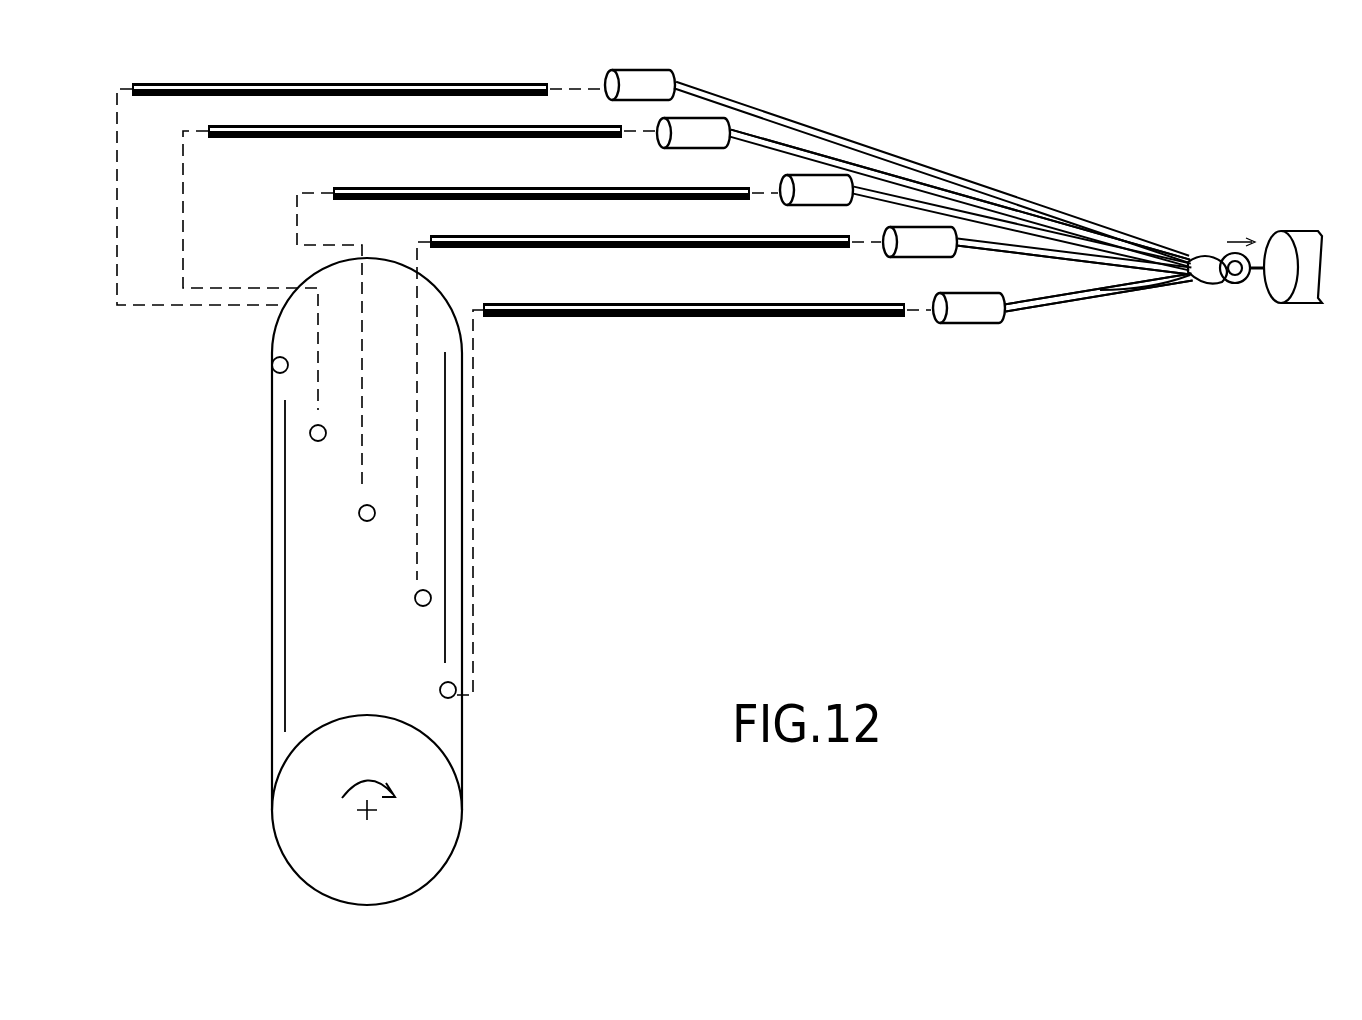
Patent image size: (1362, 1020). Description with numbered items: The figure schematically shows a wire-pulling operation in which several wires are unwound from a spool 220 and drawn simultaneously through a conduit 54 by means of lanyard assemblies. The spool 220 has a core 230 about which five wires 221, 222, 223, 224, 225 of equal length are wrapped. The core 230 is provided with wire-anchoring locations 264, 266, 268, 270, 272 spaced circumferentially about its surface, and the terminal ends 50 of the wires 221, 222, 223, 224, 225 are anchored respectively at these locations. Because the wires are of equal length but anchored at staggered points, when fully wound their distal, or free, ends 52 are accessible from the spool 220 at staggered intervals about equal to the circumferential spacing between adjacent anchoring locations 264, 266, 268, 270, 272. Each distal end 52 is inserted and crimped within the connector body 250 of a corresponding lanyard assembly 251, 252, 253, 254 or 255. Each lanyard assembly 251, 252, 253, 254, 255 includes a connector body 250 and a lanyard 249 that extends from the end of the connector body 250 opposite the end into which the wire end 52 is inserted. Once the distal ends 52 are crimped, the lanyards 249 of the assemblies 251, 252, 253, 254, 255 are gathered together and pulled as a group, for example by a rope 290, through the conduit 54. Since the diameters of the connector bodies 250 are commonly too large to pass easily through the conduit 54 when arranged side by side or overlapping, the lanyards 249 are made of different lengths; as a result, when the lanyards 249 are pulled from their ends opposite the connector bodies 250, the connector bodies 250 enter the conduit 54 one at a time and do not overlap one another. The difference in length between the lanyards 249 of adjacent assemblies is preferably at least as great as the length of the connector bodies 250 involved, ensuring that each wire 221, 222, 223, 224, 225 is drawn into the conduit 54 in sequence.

The terminal end 50 is at (213, 82).
The distal end 52 is at (546, 82).
The conduit 54 is at (1307, 303).
The spool 220 is at (543, 500).
The wire 221 is at (740, 318).
The wire 222 is at (608, 250).
The wire 223 is at (560, 201).
The wire 224 is at (515, 140).
The wire 225 is at (450, 82).
The core 230 is at (305, 670).
The lanyard 249 is at (760, 110).
The connector body 250 is at (650, 68).
The lanyard assembly 251 is at (1087, 307).
The lanyard assembly 252 is at (1150, 300).
The lanyard assembly 253 is at (1150, 235).
The lanyard assembly 254 is at (1040, 200).
The lanyard assembly 255 is at (865, 143).
The wire-anchoring location 264 is at (455, 682).
The wire-anchoring location 266 is at (415, 592).
The wire-anchoring location 268 is at (358, 505).
The wire-anchoring location 270 is at (310, 428).
The wire-anchoring location 272 is at (275, 358).
The rope 290 is at (1250, 287).